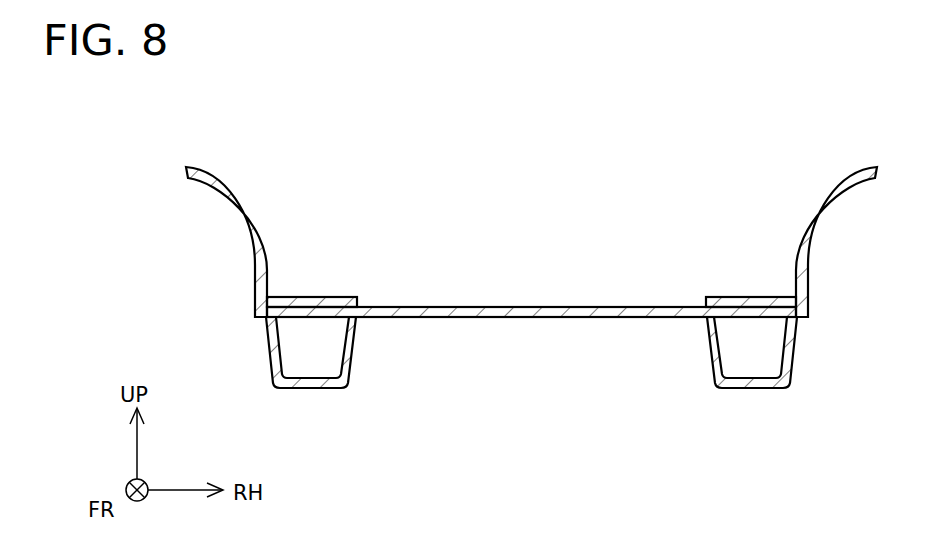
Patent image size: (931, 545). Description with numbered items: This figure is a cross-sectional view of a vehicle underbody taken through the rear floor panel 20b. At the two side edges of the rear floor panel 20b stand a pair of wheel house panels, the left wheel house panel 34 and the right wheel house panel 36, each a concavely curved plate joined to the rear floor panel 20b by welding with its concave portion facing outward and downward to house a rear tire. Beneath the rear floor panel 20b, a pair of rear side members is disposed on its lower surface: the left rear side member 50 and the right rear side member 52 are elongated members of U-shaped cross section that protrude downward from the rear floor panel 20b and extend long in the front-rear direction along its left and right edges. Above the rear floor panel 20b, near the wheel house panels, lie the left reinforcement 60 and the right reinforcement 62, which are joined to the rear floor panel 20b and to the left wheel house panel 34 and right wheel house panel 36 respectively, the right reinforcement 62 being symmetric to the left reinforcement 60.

The left wheel house panel 34 is at (222, 180).
The right wheel house panel 36 is at (840, 180).
The rear floor panel 20b is at (533, 305).
The left reinforcement 60 is at (322, 298).
The right reinforcement 62 is at (740, 298).
The left rear side member 50 is at (312, 388).
The right rear side member 52 is at (751, 388).